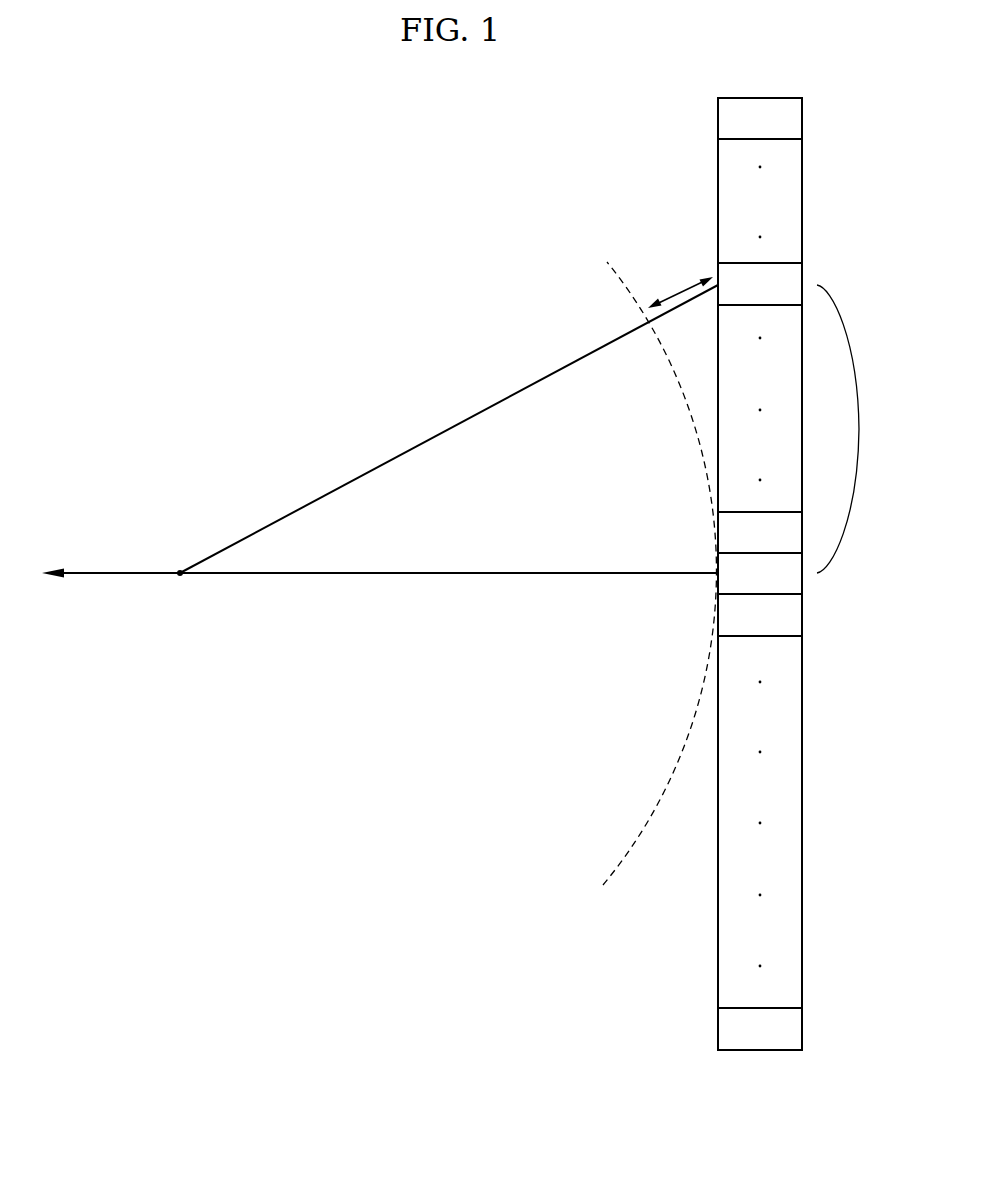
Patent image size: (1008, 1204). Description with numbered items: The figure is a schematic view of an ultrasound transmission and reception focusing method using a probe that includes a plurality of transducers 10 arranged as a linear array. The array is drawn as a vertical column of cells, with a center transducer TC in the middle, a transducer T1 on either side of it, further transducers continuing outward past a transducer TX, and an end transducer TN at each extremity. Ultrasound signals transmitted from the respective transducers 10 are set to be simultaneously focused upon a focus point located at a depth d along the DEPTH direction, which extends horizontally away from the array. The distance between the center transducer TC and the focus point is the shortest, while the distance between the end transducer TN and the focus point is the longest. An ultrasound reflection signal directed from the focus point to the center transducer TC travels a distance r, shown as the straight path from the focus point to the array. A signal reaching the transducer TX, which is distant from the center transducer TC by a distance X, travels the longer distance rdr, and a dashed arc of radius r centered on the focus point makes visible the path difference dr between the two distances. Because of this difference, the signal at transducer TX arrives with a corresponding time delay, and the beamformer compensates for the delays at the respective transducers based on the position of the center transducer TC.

The transducers 10 is at (794, 574).
The depth d is at (180, 591).
The distance x X is at (849, 429).
The distance r is at (180, 573).
The distance r plus Δr rdr is at (180, 573).
The difference Δr dr is at (682, 293).
The depth axis DEPTH is at (107, 592).
The end transducer Tn TN is at (760, 118).
The transducer Tx TX is at (760, 284).
The transducer T1 is at (760, 532).
The center transducer Tc TC is at (760, 573).